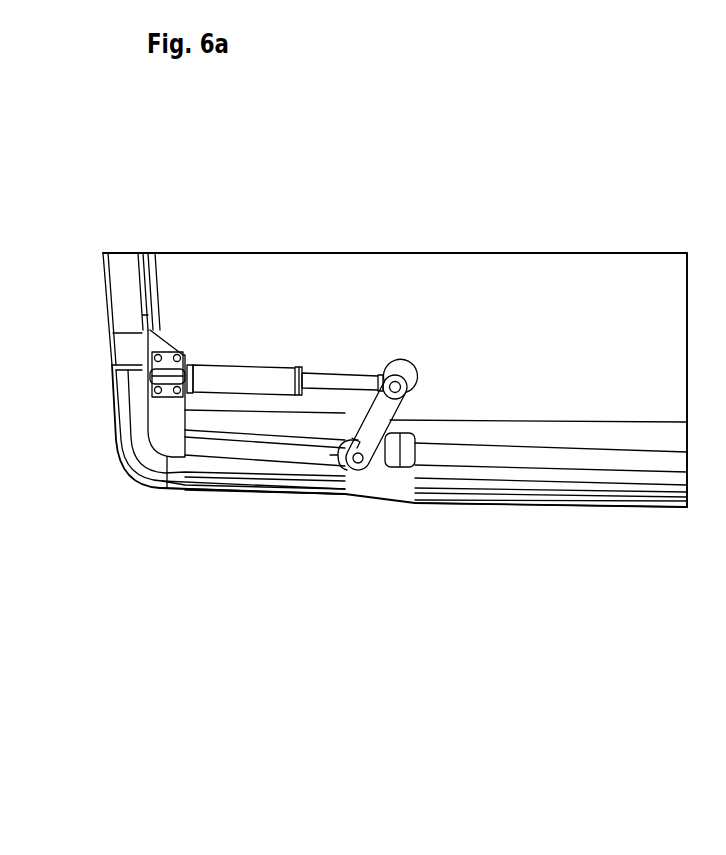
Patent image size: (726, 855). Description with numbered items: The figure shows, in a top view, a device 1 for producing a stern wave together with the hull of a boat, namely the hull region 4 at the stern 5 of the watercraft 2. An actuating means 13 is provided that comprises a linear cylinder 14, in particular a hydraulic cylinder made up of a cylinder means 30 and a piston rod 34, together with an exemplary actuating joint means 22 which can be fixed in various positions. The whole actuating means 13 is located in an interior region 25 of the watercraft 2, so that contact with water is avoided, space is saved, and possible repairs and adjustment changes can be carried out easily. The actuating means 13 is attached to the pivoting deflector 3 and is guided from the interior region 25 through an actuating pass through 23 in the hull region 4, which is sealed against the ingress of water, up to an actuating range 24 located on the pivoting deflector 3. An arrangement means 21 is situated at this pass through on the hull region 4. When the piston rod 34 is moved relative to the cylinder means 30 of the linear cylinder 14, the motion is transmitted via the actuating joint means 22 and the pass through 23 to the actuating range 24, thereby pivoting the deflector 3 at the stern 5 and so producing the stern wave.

The device for producing a stern wave 1 is at (507, 162).
The watercraft 2 is at (648, 172).
The pivoting deflector 3 is at (202, 558).
The hull region 4 is at (402, 547).
The stern 5 is at (252, 617).
The actuating means 13 is at (390, 223).
The linear cylinder 14 is at (355, 337).
The arrangement means 21 is at (375, 477).
The actuating joint means 22 is at (423, 345).
The actuating pass through 23 is at (343, 455).
The actuating range 24 is at (356, 472).
The interior region 25 is at (578, 347).
The cylinder means 30 is at (242, 365).
The piston rod 34 is at (328, 375).